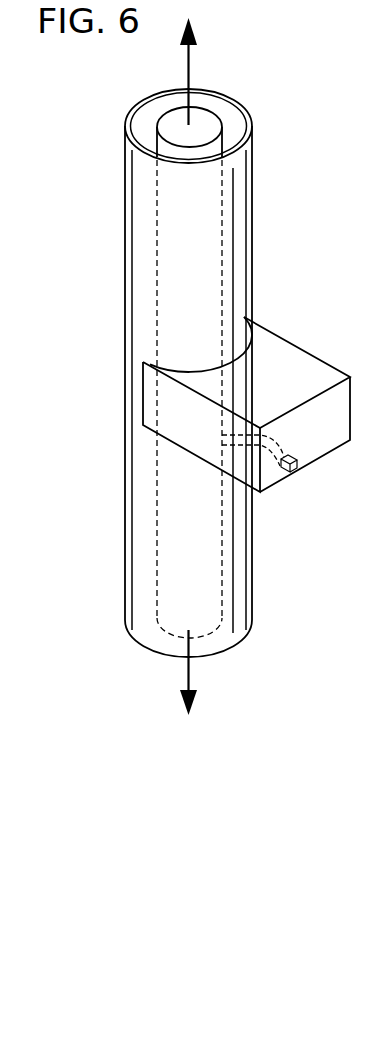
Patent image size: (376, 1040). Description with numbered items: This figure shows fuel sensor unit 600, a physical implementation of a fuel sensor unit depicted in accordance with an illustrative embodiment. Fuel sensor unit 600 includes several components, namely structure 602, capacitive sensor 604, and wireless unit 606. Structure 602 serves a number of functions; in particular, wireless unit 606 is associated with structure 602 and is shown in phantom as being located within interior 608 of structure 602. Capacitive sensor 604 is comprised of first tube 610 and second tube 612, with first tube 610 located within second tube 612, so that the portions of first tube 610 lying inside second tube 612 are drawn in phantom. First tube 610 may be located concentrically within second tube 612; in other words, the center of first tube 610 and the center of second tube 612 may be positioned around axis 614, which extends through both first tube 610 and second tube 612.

The fuel sensor unit 600 is at (314, 175).
The structure 602 is at (287, 337).
The capacitive sensor 604 is at (271, 84).
The wireless unit 606 is at (300, 462).
The interior 608 is at (331, 372).
The first tube 610 is at (241, 109).
The second tube 612 is at (124, 373).
The axis 614 is at (187, 72).